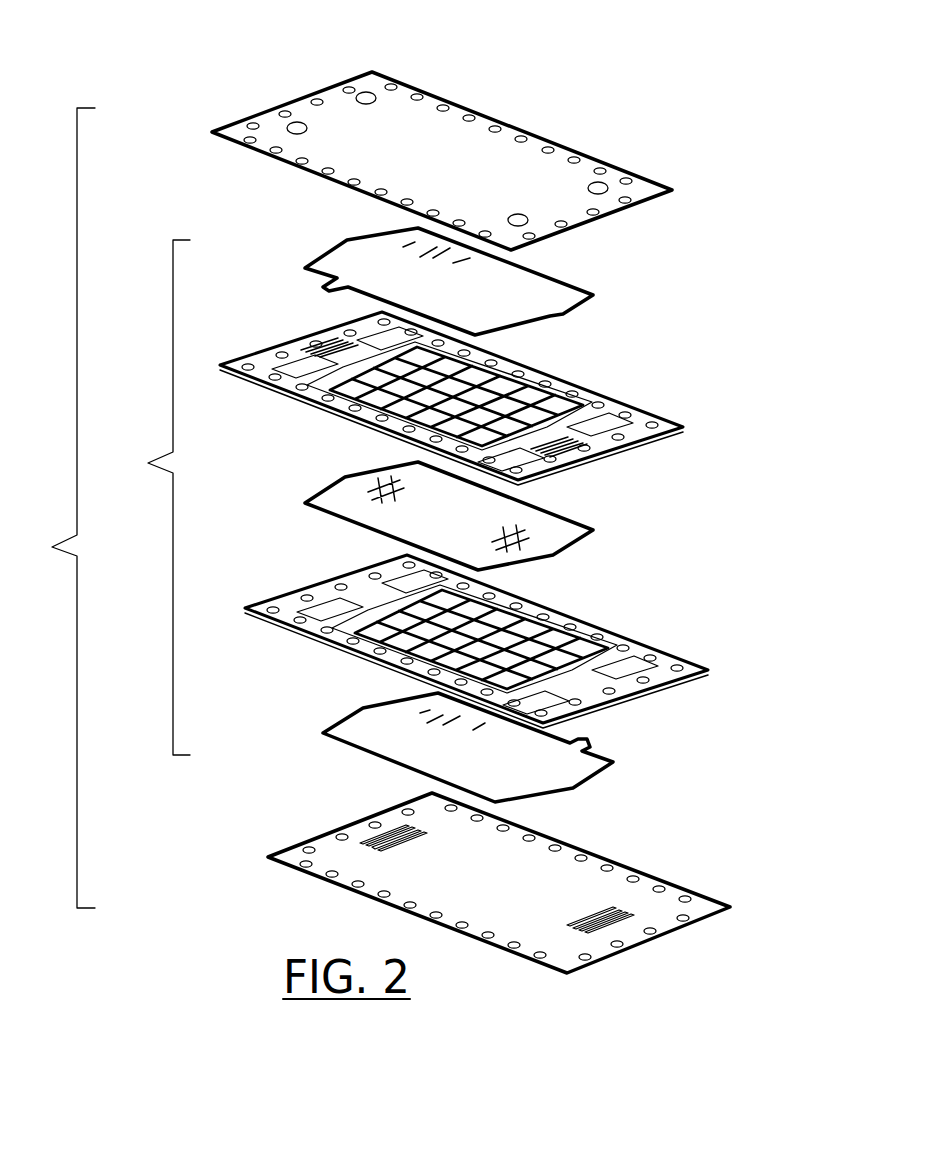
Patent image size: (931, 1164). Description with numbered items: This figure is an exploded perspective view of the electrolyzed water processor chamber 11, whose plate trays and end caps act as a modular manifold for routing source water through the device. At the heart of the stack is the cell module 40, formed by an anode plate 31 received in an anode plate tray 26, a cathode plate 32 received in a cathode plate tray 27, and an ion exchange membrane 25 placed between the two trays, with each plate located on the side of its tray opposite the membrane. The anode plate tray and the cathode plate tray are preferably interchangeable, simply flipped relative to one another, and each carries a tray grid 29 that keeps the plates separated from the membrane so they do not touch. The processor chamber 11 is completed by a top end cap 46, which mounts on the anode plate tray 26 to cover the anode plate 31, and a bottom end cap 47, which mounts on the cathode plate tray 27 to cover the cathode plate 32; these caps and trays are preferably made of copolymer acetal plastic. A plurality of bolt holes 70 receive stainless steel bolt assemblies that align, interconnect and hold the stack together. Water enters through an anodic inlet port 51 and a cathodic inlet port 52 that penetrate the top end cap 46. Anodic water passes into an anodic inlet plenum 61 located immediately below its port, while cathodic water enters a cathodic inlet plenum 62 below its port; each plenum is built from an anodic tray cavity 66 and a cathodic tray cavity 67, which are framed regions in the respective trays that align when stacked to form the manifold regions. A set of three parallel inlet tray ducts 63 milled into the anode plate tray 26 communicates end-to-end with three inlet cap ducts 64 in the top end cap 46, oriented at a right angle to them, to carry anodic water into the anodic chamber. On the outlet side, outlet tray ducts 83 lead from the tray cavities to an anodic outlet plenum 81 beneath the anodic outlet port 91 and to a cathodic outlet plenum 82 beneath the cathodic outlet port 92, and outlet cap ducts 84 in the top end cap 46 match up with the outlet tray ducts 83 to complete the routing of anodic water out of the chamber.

The processor chamber 11 is at (57, 508).
The cell module 40 is at (152, 497).
The top end cap 46 is at (674, 190).
The bottom end cap 47 is at (732, 908).
The anodic inlet port 51 is at (293, 123).
The cathodic inlet port 52 is at (362, 94).
The anodic outlet port 91 is at (600, 183).
The cathodic outlet port 92 is at (522, 225).
The bolt holes 70 is at (527, 140).
The anode plate 31 is at (568, 313).
The anode plate tray 26 is at (683, 428).
The tray grid 29 is at (545, 372).
The cathodic inlet plenum 62 is at (300, 365).
The inlet tray ducts 63 is at (332, 346).
The anodic tray cavity 66 is at (385, 338).
The cathodic outlet plenum 82 is at (640, 446).
The outlet tray ducts 83 is at (585, 452).
The ion exchange membrane 25 is at (555, 548).
The cathode plate tray 27 is at (708, 670).
The cathodic tray cavity 67 is at (308, 612).
The anodic inlet plenum 61 is at (405, 578).
The anodic outlet plenum 81 is at (545, 705).
The cathode plate 32 is at (575, 782).
The inlet cap ducts 64 is at (378, 830).
The outlet cap ducts 84 is at (600, 910).